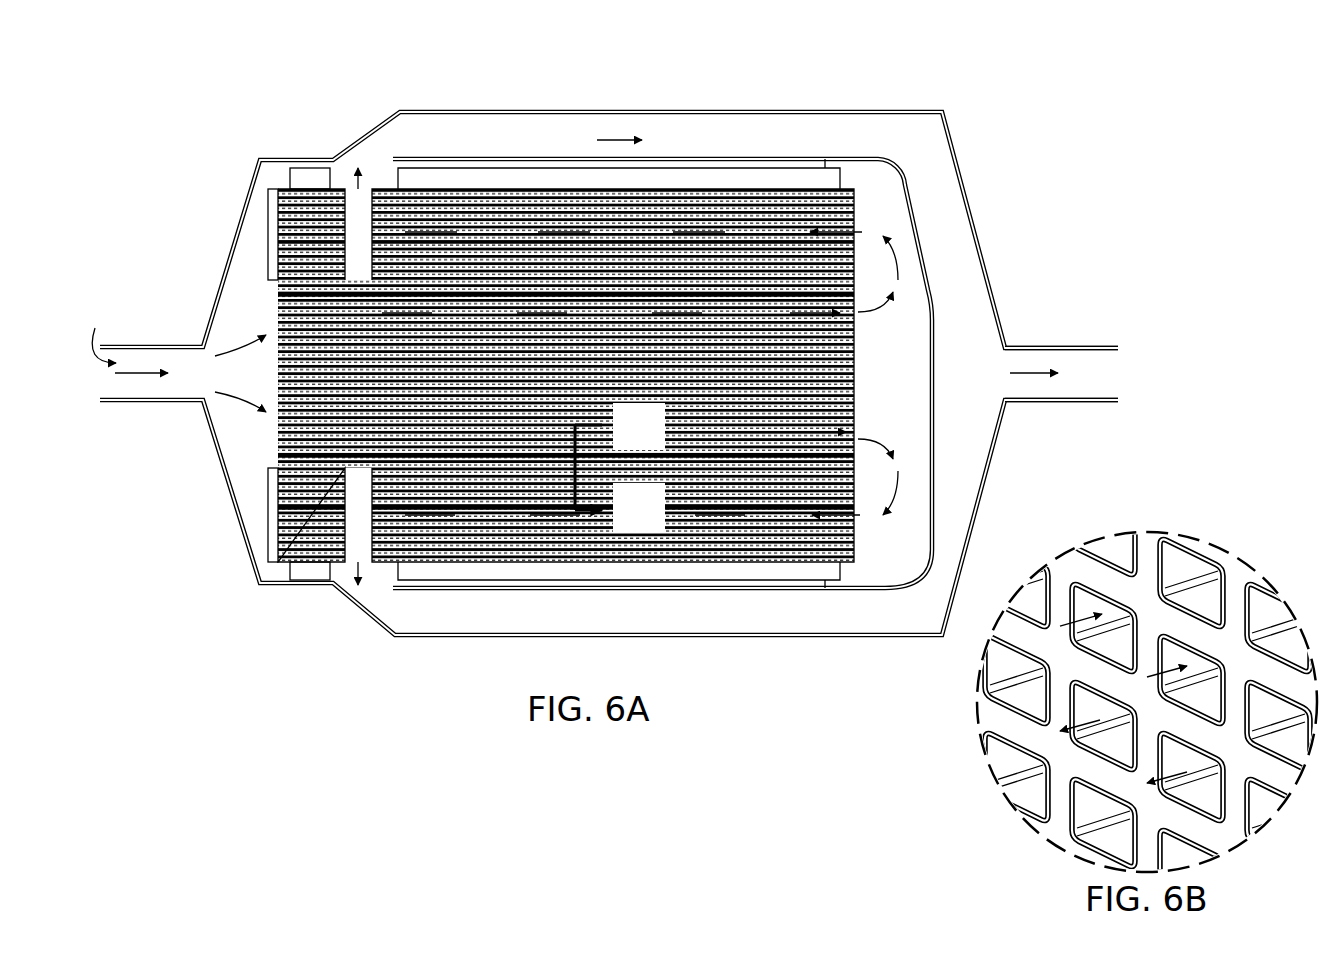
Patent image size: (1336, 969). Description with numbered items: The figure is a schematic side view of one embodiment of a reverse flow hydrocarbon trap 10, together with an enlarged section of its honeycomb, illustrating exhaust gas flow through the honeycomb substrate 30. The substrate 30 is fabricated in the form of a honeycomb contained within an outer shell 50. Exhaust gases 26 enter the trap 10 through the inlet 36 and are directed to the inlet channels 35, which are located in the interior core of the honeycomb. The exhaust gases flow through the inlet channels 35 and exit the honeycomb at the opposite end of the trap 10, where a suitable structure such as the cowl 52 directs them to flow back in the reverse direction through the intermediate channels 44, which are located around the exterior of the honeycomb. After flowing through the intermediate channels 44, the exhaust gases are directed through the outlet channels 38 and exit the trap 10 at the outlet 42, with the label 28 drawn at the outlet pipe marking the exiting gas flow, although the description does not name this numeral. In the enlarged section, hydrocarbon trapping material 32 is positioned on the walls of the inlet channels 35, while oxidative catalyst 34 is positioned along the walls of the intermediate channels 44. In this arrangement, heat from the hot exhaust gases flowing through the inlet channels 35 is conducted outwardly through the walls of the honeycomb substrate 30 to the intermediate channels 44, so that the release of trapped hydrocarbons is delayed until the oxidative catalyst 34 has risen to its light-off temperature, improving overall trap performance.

In FIG. 6A, the trap 10 is at (228, 161).
In FIG. 6A, the exhaust gases 26 is at (140, 375).
In FIG. 6A, the outlet 28 is at (1029, 375).
In FIG. 6B, the substrate 30 is at (1057, 828).
In FIG. 6B, the hydrocarbon trapping material 32 is at (1107, 590).
In FIG. 6B, the oxidative catalyst 34 is at (1207, 806).
In FIG. 6A, the inlet channels 35 is at (280, 298).
In FIG. 6B, the inlet channels 35 is at (1090, 597).
In FIG. 6A, the inlet 36 is at (176, 358).
In FIG. 6A, the outlet channels 38 is at (546, 150).
In FIG. 6A, the outlet 42 is at (1062, 347).
In FIG. 6A, the intermediate channels 44 is at (855, 498).
In FIG. 6B, the intermediate channels 44 is at (1224, 794).
In FIG. 6A, the outer shell 50 is at (404, 111).
In FIG. 6A, the cowl 52 is at (873, 157).